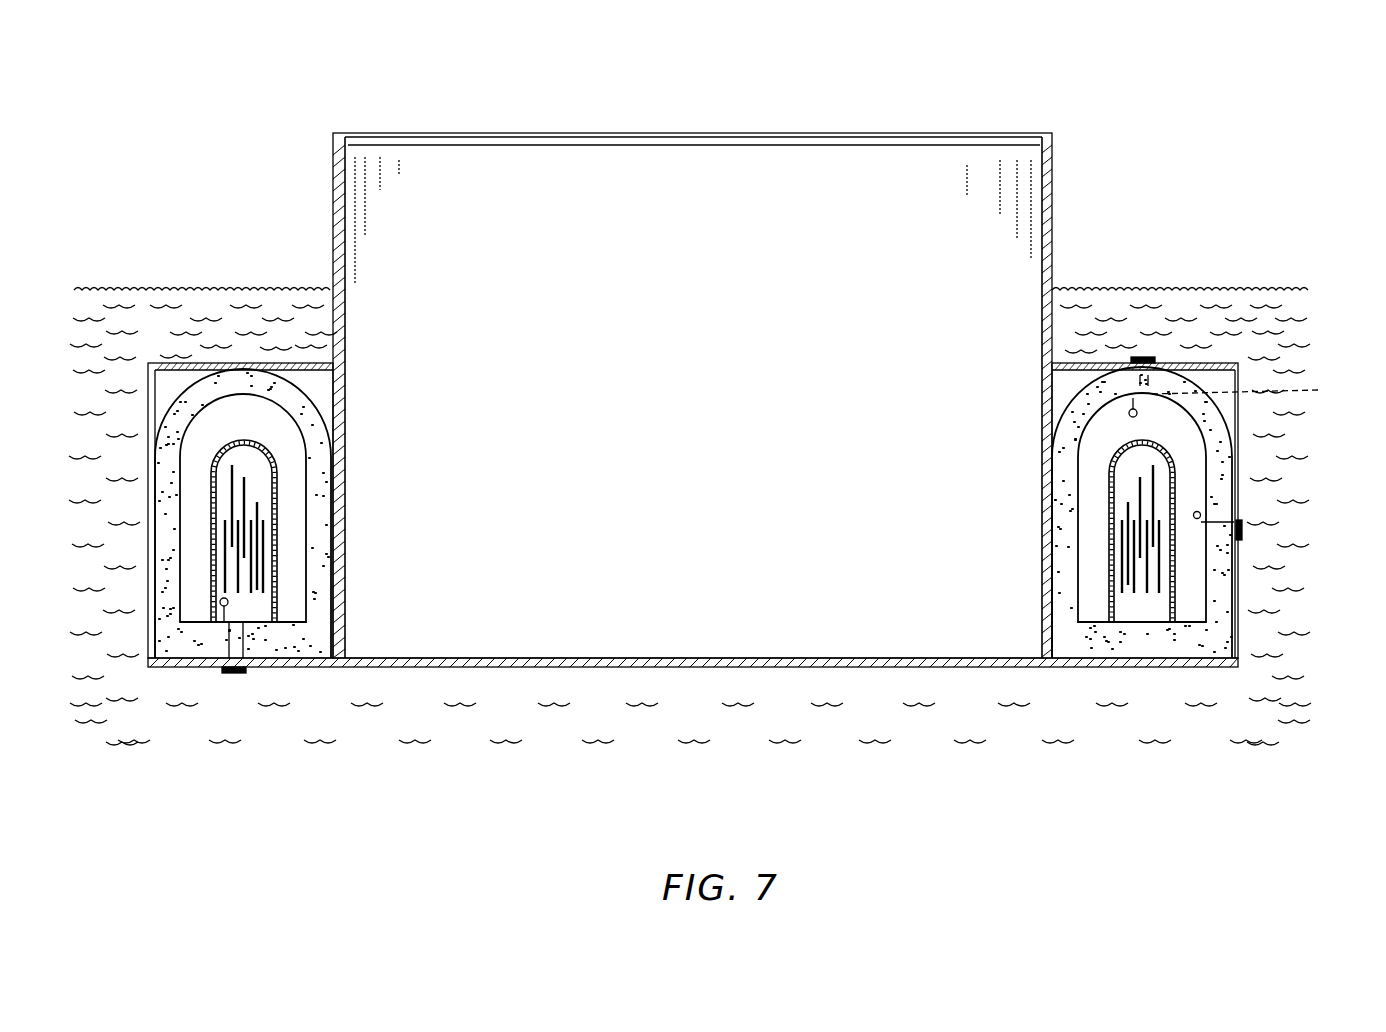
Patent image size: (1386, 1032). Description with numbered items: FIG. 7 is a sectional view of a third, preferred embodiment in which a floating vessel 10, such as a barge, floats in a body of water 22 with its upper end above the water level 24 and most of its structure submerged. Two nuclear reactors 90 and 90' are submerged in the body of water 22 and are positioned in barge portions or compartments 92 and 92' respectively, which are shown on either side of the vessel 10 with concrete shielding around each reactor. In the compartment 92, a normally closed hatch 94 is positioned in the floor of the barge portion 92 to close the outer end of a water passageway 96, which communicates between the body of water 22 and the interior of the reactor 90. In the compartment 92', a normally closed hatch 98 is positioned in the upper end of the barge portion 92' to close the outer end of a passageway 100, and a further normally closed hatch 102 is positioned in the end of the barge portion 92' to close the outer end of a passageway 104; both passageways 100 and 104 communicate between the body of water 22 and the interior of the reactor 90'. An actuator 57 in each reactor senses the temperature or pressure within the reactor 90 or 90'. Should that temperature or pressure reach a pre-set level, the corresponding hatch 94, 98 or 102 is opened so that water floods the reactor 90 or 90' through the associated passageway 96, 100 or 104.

The floating vessel 10 is at (712, 110).
The body of water 22 is at (773, 707).
The water level 24 is at (1276, 287).
The actuator 57 is at (228, 606).
The nuclear reactor 90 is at (243, 442).
The nuclear reactor 90' is at (1149, 440).
The barge portion 92 is at (215, 595).
The barge portion 92' is at (1145, 579).
The hatch 94 is at (230, 674).
The water passageway 96 is at (244, 642).
The hatch 98 is at (1142, 352).
The passageway 100 is at (1258, 387).
The hatch 102 is at (1252, 528).
The passageway 104 is at (1220, 537).